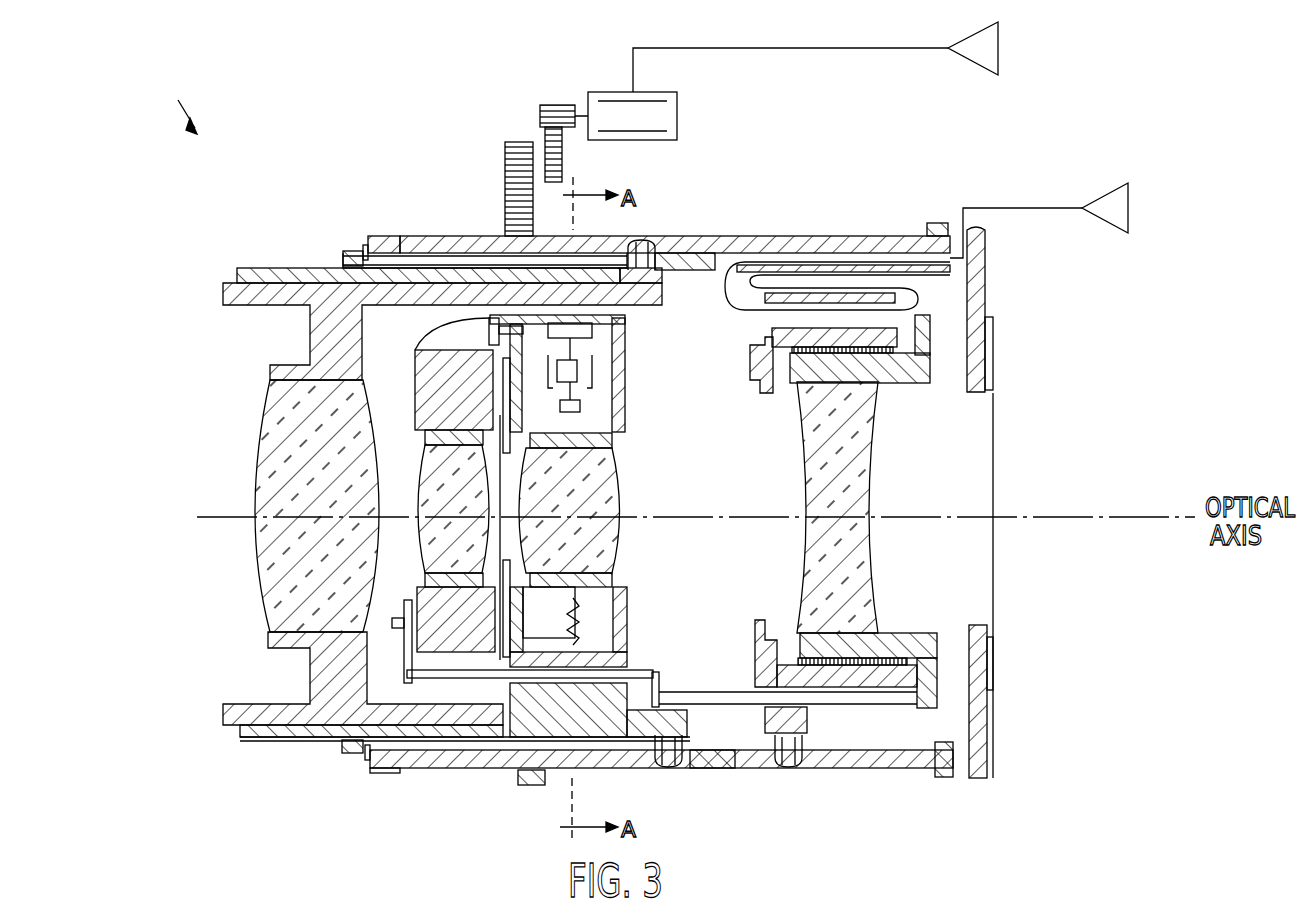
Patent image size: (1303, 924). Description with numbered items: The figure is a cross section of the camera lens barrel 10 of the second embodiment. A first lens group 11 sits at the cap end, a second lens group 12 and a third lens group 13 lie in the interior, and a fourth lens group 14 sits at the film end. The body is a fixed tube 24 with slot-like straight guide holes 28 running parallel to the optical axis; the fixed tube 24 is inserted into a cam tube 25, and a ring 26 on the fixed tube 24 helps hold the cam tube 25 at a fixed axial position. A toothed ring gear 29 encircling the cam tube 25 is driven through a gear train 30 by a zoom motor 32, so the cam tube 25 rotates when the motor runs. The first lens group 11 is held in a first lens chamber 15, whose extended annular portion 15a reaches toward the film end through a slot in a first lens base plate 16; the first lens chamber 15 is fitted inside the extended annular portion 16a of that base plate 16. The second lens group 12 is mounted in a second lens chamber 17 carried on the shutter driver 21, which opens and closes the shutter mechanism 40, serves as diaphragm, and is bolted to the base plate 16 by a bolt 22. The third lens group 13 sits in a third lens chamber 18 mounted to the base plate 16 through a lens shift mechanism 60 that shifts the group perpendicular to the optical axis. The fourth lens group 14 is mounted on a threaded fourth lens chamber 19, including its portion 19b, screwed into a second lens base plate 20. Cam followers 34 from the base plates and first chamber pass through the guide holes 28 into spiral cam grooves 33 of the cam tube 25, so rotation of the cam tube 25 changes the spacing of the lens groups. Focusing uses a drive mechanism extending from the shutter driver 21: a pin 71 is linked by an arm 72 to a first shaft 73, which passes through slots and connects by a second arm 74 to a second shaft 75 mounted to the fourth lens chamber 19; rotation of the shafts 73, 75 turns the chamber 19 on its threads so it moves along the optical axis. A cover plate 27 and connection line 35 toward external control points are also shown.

The camera lens barrel 10 is at (173, 103).
The first lens group 11 is at (275, 555).
The second lens group 12 is at (437, 553).
The third lens group 13 is at (615, 493).
The fourth lens group 14 is at (862, 450).
The first lens chamber 15 is at (235, 283).
The extended annular portion 15a is at (400, 262).
The first lens base plate 16 is at (632, 312).
The extended annular portion 16a is at (255, 268).
The second lens chamber 17 is at (425, 437).
The third lens chamber 18 is at (606, 441).
The fourth lens chamber 19 is at (930, 348).
The lens holder portion 19b is at (937, 705).
The second lens base plate 20 is at (848, 330).
The shutter driver 21 is at (432, 378).
The bolt 22 is at (489, 328).
The fixed tube 24 is at (345, 252).
The cam tube 25 is at (385, 236).
The ring 26 is at (365, 245).
The cover plate 27 is at (985, 272).
The guide holes 28 is at (475, 236).
The ring gear 29 is at (506, 235).
The gear train 30 is at (522, 104).
The zoom motor 32 is at (680, 118).
The cam groove 33 is at (650, 240).
The cam follower 34 is at (692, 253).
The connection line 35 is at (766, 48).
The shutter mechanism 40 is at (487, 526).
The lens shift mechanism 60 is at (612, 372).
The pin 71 is at (403, 625).
The arm 72 is at (418, 690).
The first shaft 73 is at (455, 680).
The second arm 74 is at (695, 700).
The second shaft 75 is at (735, 705).